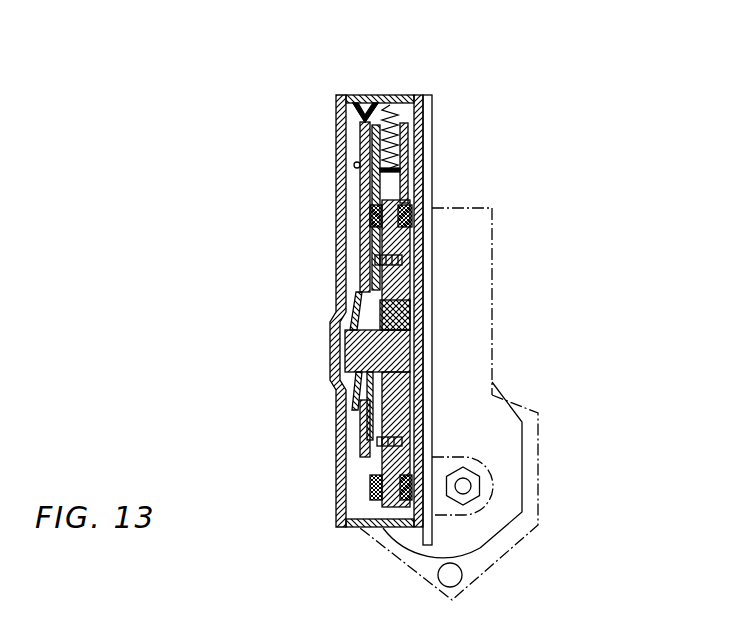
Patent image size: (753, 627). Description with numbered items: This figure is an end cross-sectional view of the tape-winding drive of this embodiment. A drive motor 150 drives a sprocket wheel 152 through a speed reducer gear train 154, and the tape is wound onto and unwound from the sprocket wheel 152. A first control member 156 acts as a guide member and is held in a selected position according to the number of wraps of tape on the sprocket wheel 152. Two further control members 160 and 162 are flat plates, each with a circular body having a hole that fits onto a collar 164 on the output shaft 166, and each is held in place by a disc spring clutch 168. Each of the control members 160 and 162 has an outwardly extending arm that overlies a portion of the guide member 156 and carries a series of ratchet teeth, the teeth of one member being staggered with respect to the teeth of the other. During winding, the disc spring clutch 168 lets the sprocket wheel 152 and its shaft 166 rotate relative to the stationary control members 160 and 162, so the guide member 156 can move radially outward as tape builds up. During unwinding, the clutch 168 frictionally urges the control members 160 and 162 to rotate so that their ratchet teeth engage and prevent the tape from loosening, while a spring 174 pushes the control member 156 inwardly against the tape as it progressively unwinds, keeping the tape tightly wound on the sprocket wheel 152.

The drive motor 150 is at (527, 401).
The sprocket wheel 152 is at (368, 466).
The speed reducer gear train 154 is at (492, 270).
The first control member 156 is at (403, 168).
The control member 160 is at (358, 113).
The control member 162 is at (370, 113).
The collar 164 is at (360, 373).
The output shaft 166 is at (350, 347).
The disc spring clutch 168 is at (362, 297).
The spring 174 is at (385, 110).